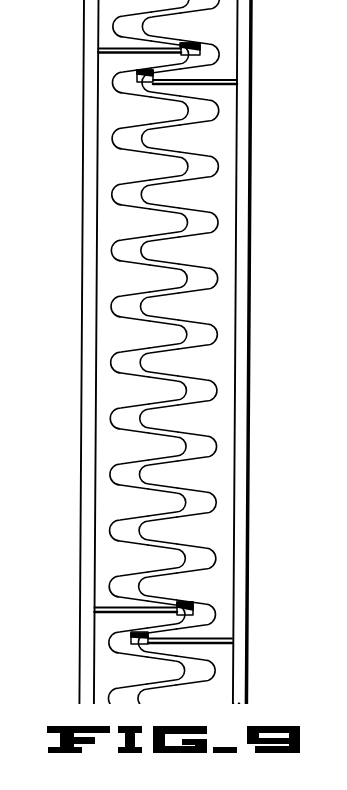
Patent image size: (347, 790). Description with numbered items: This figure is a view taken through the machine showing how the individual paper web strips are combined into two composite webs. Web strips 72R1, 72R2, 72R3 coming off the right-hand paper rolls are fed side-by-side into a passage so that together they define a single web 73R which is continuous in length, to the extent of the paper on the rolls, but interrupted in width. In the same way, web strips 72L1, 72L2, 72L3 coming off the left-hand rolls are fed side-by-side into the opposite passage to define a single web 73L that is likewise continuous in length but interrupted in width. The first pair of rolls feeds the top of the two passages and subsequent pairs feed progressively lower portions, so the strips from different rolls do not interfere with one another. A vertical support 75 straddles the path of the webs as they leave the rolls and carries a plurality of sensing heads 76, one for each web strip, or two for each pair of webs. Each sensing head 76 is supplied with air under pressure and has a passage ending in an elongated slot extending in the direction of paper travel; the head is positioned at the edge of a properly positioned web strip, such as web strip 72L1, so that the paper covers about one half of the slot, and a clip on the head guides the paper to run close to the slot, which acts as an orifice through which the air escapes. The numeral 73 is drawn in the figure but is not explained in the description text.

The web strip 72R1 is at (113, 28).
The web strip 72R2 is at (113, 94).
The web strip 72R3 is at (110, 657).
The web strip 72L1 is at (222, 66).
The web strip 72L2 is at (220, 118).
The web strip 72L3 is at (215, 667).
The single web 73R is at (101, 244).
The single web 73L is at (232, 220).
The serpentine heating element 73 is at (331, 292).
The vertical support 75 is at (88, 345).
The sensing head 76 is at (137, 76).